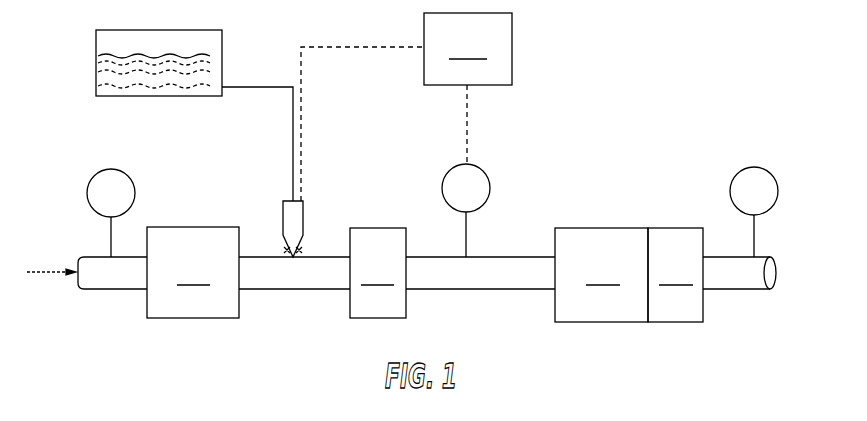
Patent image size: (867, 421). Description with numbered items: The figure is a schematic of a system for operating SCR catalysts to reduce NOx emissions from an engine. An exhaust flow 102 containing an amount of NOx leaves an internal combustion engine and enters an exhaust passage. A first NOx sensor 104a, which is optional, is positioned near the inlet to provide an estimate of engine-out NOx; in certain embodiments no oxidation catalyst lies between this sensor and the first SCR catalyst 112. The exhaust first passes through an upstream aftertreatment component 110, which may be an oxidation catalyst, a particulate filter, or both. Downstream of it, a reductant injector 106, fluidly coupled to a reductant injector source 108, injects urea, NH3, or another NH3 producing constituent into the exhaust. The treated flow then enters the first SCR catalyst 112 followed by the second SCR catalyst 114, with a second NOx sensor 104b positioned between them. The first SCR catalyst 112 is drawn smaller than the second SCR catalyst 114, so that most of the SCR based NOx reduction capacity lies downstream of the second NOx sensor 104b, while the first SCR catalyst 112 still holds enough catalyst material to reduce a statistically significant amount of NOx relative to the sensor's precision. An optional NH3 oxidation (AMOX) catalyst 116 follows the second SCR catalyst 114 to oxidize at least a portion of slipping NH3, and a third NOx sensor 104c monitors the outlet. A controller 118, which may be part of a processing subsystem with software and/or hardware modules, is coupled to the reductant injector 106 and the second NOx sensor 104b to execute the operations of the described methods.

The exhaust flow 102 is at (55, 265).
The first NOx sensor 104a is at (110, 169).
The second NOx sensor 104b is at (489, 193).
The third NOx sensor 104c is at (756, 167).
The reductant injector 106 is at (284, 202).
The reductant injector source 108 is at (198, 30).
The upstream aftertreatment component 110 is at (193, 272).
The first SCR catalyst 112 is at (378, 273).
The second SCR catalyst 114 is at (601, 275).
The NH3 oxidation (AMOX) catalyst 116 is at (675, 275).
The controller 118 is at (406, 107).